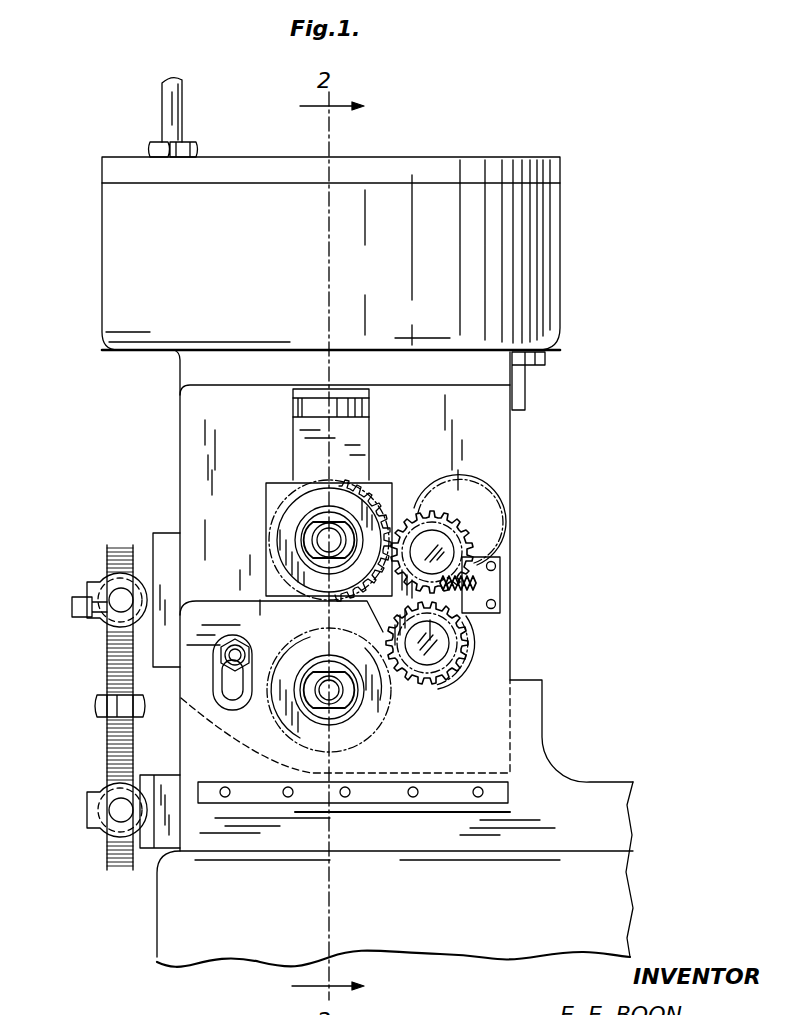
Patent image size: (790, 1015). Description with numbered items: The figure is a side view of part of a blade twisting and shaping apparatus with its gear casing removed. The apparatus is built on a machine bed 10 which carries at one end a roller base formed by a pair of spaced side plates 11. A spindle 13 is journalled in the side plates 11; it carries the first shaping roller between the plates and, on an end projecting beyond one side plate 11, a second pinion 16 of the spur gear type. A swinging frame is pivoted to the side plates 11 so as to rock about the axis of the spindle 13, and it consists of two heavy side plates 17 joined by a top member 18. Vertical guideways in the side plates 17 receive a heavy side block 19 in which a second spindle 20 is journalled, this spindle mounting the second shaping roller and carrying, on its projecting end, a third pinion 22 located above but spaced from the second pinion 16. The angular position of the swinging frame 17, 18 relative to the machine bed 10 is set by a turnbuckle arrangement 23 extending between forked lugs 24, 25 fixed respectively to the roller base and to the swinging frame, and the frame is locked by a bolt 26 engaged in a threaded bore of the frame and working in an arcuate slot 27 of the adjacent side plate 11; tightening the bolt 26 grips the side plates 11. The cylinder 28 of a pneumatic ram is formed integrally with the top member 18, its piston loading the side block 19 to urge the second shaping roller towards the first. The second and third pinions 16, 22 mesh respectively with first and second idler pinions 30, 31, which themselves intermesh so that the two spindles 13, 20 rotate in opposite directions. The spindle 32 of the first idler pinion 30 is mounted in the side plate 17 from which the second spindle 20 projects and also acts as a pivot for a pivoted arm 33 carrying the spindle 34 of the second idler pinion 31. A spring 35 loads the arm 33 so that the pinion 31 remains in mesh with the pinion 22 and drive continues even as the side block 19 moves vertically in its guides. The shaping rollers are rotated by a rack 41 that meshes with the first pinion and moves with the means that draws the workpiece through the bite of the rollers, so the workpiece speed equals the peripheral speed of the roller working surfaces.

The machine bed 10 is at (157, 923).
The side plates 11 is at (204, 604).
The spindle 13 is at (336, 696).
The second pinion 16 is at (387, 702).
The side plates 17 is at (210, 423).
The top member 18 is at (355, 399).
The side block 19 is at (372, 448).
The second spindle 20 is at (323, 540).
The third pinion 22 is at (290, 495).
The turnbuckle arrangement 23 is at (97, 709).
The forked lug 24 is at (100, 824).
The forked lug 25 is at (99, 586).
The bolt 26 is at (245, 650).
The arcuate slot 27 is at (226, 690).
The cylinder 28 is at (562, 240).
The first idler pinion 30 is at (472, 646).
The second idler pinion 31 is at (468, 546).
The spindle 32 is at (436, 641).
The pivoted arm 33 is at (455, 604).
The spindle 34 is at (436, 547).
The spring 35 is at (470, 584).
The rack 41 is at (78, 616).